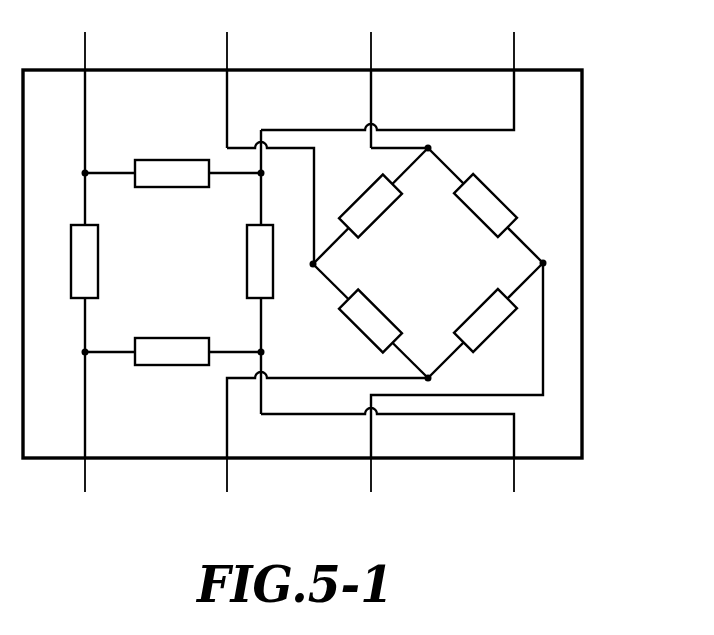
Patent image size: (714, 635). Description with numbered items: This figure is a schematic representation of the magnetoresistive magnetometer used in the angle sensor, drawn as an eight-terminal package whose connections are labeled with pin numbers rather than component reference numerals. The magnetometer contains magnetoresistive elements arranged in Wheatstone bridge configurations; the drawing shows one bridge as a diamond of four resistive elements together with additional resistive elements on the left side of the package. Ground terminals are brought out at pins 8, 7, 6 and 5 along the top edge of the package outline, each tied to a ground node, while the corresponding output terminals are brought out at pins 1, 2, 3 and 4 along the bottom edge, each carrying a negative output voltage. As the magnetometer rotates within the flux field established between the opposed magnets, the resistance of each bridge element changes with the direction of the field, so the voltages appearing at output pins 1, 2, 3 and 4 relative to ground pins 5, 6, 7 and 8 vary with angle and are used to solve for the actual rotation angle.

The pin 1 (-Vo1) 1 is at (86, 476).
The pin 2 (-Vo2) 2 is at (228, 476).
The pin 3 (-Vo3) 3 is at (372, 476).
The pin 4 (-Vo4) 4 is at (513, 476).
The pin 5 (GND4) 5 is at (514, 54).
The pin 6 (GND3) 6 is at (372, 54).
The pin 7 (GND2) 7 is at (230, 54).
The pin 8 (GND1) 8 is at (86, 54).